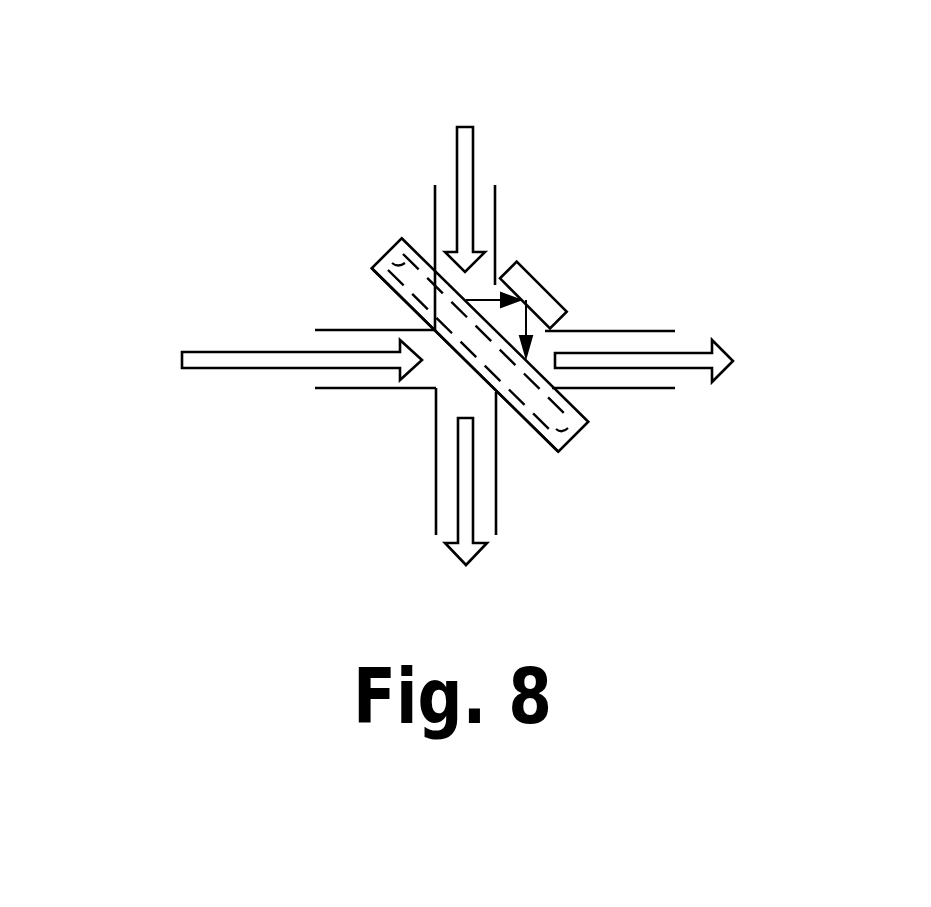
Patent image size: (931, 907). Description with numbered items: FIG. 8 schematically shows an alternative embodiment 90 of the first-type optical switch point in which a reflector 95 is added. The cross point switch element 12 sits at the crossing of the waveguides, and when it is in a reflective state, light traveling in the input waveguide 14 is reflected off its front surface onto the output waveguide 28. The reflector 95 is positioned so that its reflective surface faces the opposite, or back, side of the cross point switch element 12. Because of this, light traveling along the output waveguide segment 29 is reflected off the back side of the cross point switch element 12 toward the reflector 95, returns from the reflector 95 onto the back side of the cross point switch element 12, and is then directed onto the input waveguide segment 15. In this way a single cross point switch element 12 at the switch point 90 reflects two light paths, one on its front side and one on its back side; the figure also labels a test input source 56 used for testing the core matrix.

The alternative embodiment of the first-type optical switch point 90 is at (260, 44).
The cross point switch element 12 is at (394, 260).
The input waveguide 14 is at (362, 390).
The input waveguide segment 15 is at (617, 389).
The output waveguide 28 is at (497, 468).
The output waveguide segment 29 is at (434, 208).
The test input source 56 is at (546, 442).
The reflector 95 is at (544, 290).